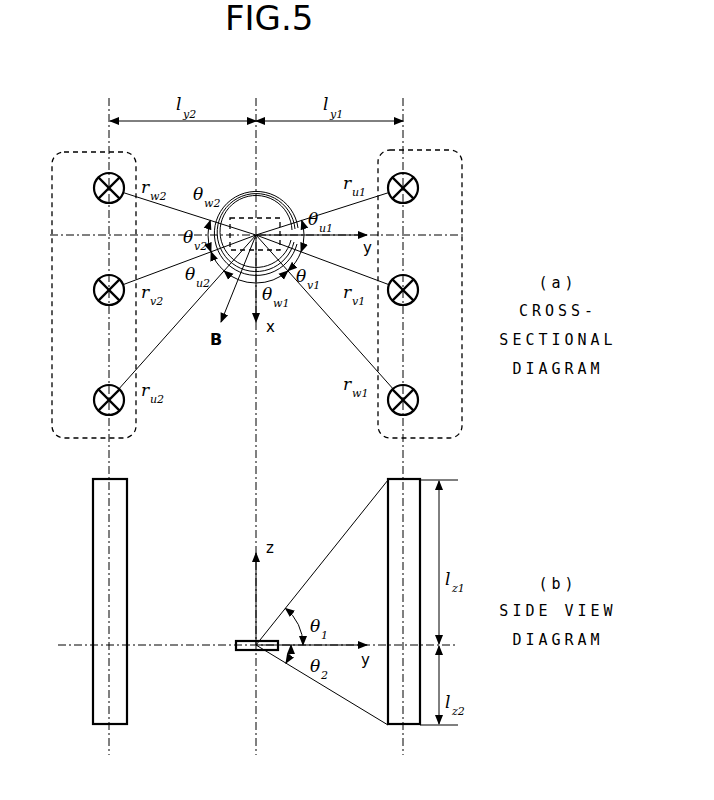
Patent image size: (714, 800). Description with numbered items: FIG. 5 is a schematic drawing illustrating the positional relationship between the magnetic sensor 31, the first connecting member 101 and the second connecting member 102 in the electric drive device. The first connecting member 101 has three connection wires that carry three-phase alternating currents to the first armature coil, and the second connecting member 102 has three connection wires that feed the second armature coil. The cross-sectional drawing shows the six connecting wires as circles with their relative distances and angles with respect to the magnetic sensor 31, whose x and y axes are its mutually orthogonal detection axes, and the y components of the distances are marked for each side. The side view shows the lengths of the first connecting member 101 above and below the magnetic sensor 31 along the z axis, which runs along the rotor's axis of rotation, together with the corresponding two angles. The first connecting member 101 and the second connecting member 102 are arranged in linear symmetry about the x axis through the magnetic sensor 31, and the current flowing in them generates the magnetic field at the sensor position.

The first connecting member 101 is at (430, 150).
The second connecting member 102 is at (83, 152).
The magnetic sensor 31 is at (262, 220).